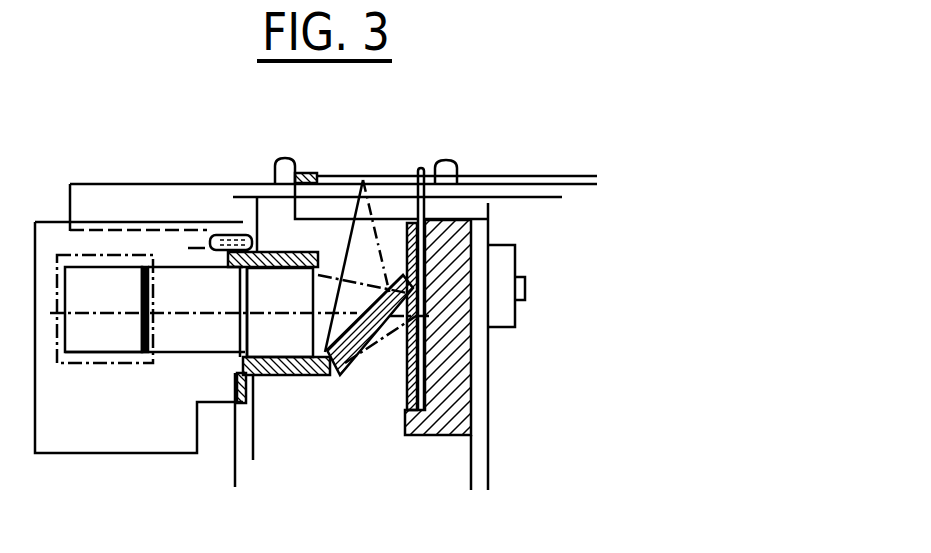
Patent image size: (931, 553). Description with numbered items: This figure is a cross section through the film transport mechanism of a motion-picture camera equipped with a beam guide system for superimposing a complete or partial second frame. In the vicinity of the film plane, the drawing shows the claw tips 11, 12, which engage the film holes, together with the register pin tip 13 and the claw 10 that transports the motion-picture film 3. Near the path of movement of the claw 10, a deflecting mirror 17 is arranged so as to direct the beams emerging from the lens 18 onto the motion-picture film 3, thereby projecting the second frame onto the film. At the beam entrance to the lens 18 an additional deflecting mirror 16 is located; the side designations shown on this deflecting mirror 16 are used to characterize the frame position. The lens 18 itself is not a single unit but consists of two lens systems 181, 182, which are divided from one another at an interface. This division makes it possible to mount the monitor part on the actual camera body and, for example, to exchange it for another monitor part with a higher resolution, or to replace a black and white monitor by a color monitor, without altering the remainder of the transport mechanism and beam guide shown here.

The motion-picture film 3 is at (343, 176).
The claw 10 is at (457, 375).
The claw tip 11 is at (290, 158).
The claw tip 12 is at (458, 158).
The register pin tip 13 is at (420, 168).
The additional deflecting mirror 16 is at (100, 330).
The deflecting mirror 17 is at (368, 342).
The lens 18 is at (235, 358).
The lens system 181 is at (180, 337).
The lens system 182 is at (278, 337).